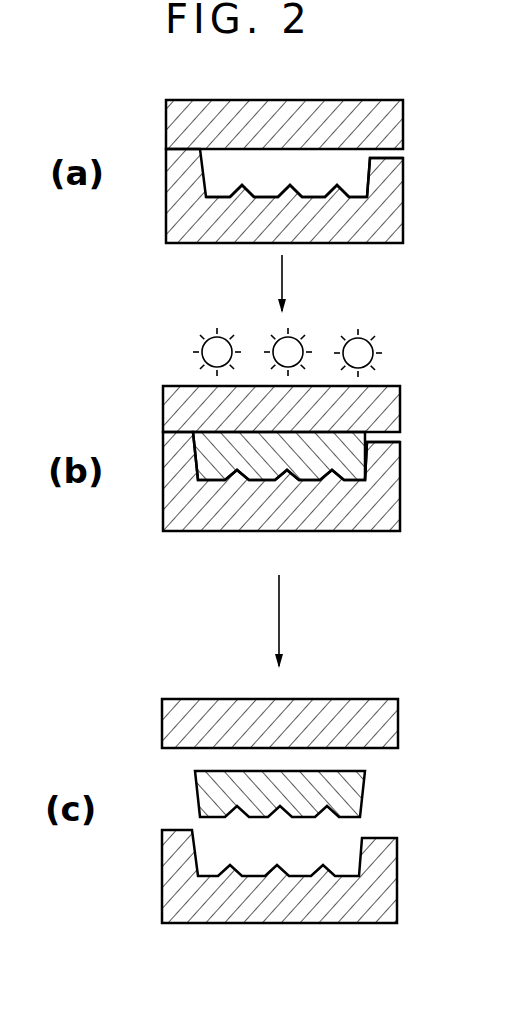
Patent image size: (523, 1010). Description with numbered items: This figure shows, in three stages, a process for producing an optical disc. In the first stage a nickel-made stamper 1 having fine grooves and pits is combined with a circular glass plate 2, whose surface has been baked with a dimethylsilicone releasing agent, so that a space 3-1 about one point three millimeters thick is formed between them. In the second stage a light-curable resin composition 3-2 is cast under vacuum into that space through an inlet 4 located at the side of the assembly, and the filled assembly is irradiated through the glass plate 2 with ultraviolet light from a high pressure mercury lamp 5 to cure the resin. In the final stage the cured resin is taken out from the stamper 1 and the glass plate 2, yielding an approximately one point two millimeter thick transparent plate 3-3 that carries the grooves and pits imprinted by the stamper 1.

The stamper 1 is at (172, 221).
The glass plate 2 is at (172, 122).
The space 3-1 is at (357, 187).
The light-curable resin composition 3-2 is at (353, 470).
The transparent plate 3-3 is at (356, 789).
The inlet 4 is at (405, 160).
The high pressure mercury lamp 5 is at (201, 346).